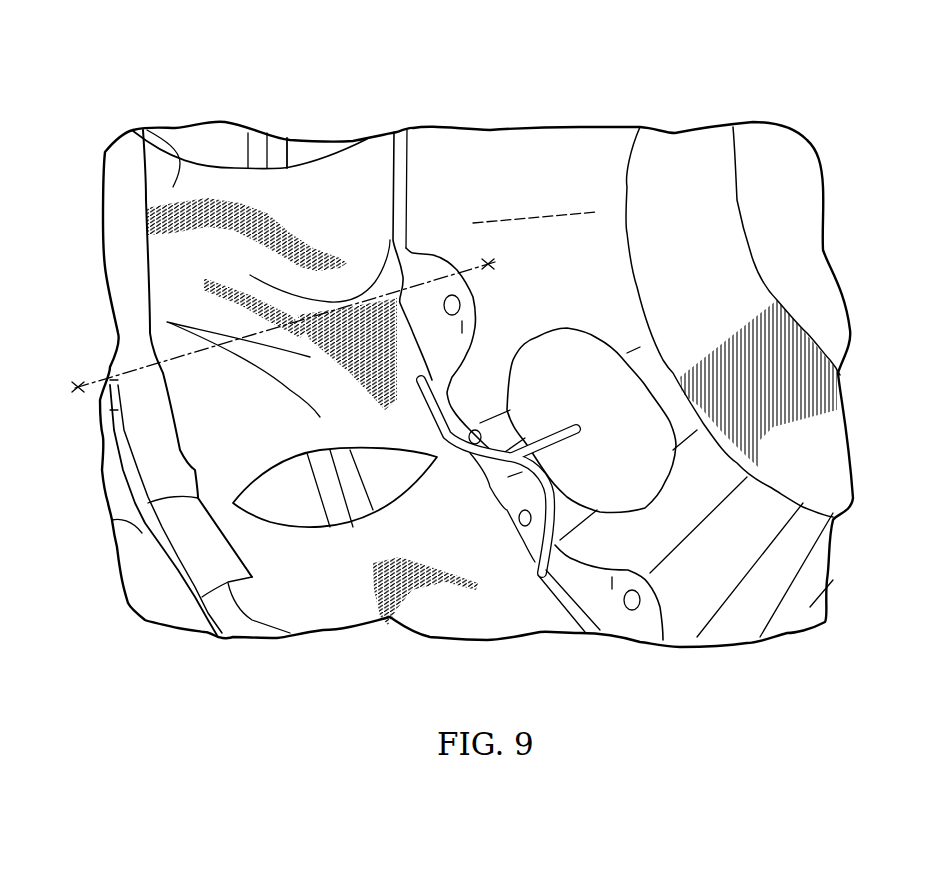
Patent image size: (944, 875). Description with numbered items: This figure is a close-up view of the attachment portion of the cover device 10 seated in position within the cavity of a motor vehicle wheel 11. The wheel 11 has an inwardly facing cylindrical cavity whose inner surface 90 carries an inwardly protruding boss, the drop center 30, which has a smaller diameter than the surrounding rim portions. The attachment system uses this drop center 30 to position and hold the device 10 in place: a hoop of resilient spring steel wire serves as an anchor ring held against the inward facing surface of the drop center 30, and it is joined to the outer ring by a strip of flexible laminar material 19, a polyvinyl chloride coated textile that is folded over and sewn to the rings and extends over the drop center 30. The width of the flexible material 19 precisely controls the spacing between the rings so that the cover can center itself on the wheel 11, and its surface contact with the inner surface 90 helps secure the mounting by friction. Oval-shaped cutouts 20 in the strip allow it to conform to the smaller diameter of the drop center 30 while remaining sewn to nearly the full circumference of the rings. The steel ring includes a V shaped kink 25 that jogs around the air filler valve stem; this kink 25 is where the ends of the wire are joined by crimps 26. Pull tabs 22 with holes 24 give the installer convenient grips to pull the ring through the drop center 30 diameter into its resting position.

The device 10 is at (77, 381).
The motor vehicle wheel 11 is at (206, 104).
The flexible laminar material 19 is at (145, 130).
The oval-shaped cutouts 20 is at (217, 160).
The pull tabs 22 is at (415, 265).
The holes 24 is at (458, 296).
The V shaped notch or kink 25 is at (527, 440).
The crimps 26 is at (457, 437).
The drop center 30 is at (337, 510).
The inner surface 90 is at (543, 183).